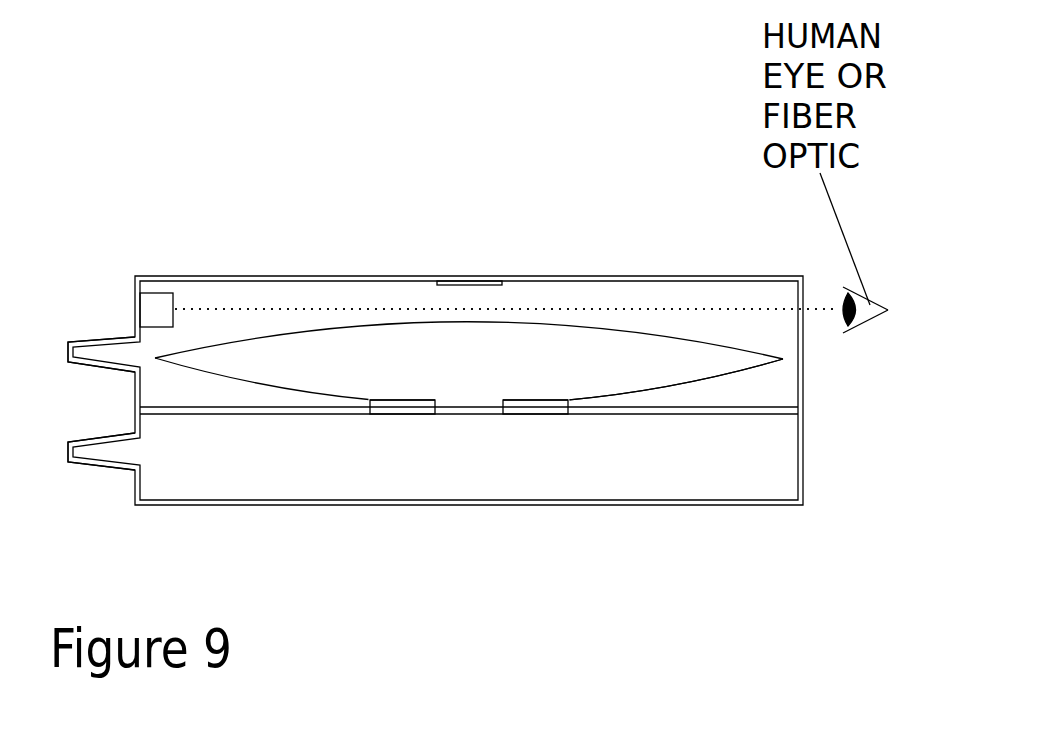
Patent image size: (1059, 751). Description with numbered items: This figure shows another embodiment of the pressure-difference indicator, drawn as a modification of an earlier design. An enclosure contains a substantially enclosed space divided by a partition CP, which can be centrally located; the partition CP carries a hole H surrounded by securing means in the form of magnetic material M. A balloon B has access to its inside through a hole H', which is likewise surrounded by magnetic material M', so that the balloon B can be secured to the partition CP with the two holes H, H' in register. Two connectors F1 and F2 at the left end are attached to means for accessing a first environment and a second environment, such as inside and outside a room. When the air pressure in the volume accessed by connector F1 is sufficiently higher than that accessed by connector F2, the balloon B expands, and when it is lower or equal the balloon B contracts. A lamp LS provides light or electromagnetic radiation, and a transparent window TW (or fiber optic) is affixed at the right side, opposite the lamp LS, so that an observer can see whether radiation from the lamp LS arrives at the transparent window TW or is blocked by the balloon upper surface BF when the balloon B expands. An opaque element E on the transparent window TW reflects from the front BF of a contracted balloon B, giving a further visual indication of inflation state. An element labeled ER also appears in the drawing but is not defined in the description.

The transparent window TW is at (342, 277).
The connector F1 is at (110, 470).
The connector F2 is at (102, 335).
The lamp LS is at (158, 293).
The balloon upper surface BF is at (413, 323).
The opaque element E is at (473, 280).
The partition CP is at (340, 417).
The magnetic material M is at (480, 491).
The magnetic material M' is at (490, 295).
The balloon B is at (627, 373).
The eye relief optical axis ER is at (703, 308).
The hole H' is at (480, 385).
The hole H is at (481, 428).